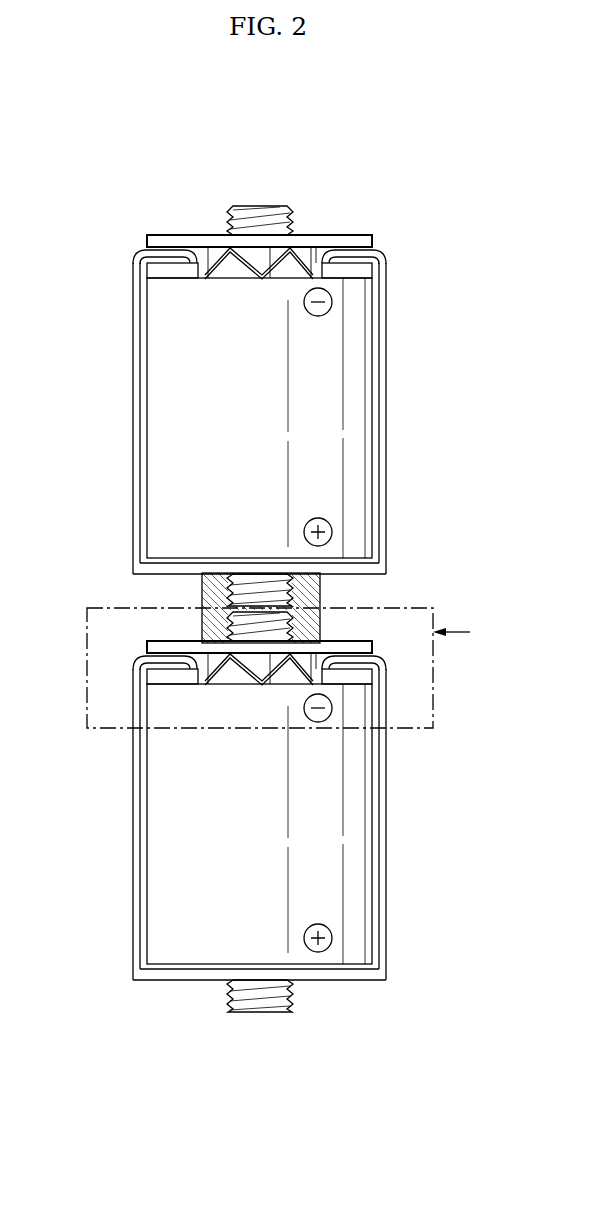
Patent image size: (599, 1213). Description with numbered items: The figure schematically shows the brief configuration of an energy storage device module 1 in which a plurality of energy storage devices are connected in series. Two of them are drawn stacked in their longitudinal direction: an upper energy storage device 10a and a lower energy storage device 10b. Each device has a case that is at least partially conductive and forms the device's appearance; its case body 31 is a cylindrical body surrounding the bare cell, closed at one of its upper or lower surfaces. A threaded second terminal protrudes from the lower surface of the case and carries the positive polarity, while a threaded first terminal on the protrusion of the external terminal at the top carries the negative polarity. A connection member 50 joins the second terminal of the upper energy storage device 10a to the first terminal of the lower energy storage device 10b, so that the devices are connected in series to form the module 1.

The energy storage device module 1 is at (72, 172).
The energy storage device 10a is at (355, 408).
The energy storage device 10b is at (292, 824).
The case body 31 is at (138, 566).
The connection member 50 is at (320, 592).